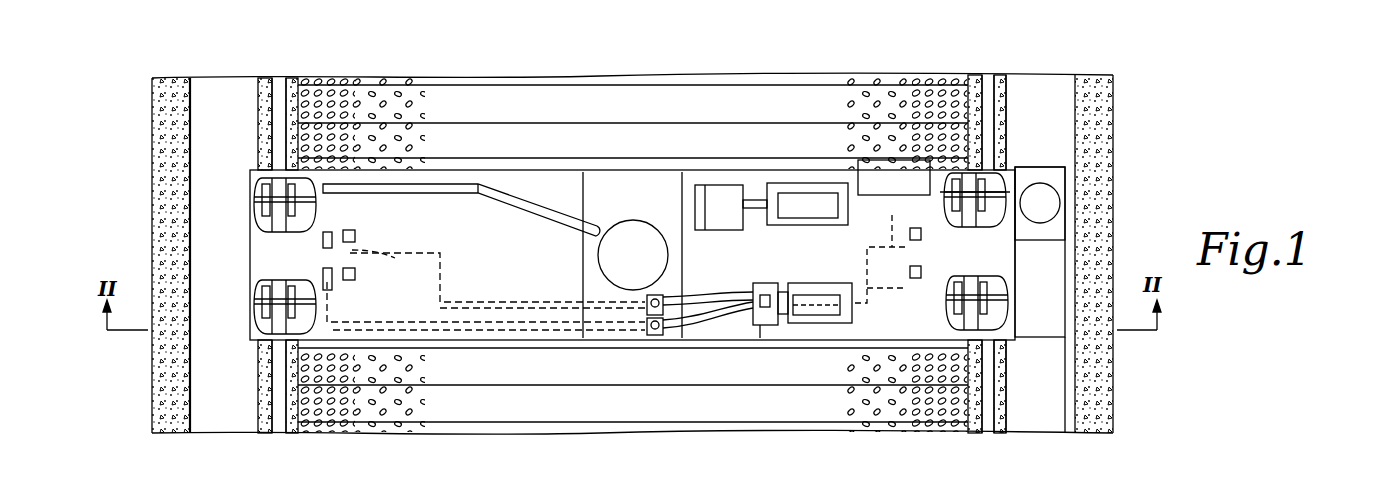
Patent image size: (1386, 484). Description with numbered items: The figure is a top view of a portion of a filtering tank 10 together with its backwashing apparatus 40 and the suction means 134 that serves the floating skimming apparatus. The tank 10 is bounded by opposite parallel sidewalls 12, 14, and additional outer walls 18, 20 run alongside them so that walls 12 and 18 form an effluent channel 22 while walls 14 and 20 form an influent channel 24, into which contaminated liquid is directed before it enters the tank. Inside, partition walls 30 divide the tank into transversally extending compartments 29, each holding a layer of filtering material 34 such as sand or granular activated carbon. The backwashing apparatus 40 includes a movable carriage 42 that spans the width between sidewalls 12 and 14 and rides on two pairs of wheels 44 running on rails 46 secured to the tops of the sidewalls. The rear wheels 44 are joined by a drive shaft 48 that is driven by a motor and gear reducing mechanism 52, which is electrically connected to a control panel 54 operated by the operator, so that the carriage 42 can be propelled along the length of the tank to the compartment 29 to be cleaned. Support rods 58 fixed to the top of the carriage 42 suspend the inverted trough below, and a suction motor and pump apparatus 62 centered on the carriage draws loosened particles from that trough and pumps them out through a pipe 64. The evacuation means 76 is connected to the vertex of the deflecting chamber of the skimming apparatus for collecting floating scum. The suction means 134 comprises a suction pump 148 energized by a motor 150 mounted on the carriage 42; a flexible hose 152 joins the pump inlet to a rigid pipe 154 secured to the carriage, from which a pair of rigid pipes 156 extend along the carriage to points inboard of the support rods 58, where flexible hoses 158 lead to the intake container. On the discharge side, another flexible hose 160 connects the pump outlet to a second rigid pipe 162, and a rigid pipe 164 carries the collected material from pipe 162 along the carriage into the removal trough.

The filtering tank 10 is at (150, 92).
The sidewall 12 is at (1000, 108).
The sidewall 14 is at (258, 102).
The outer wall 18 is at (1113, 190).
The outer wall 20 is at (152, 176).
The effluent channel 22 is at (1055, 390).
The influent channel 24 is at (200, 250).
The compartment 29 is at (425, 98).
The partition wall 30 is at (637, 122).
The filtering material 34 is at (885, 98).
The backwashing apparatus 40 is at (1070, 258).
The movable carriage 42 is at (253, 180).
The wheels 44 is at (268, 215).
The rails 46 is at (279, 78).
The drive shaft 48 is at (948, 194).
The driving motor and gear reducing mechanism 52 is at (800, 220).
The control panel 54 is at (880, 165).
The support rods 58 is at (355, 237).
The suction motor and pump apparatus 62 is at (600, 251).
The pipe 64 is at (455, 193).
The evacuation means 76 is at (797, 280).
The suction means 134 is at (762, 328).
The suction pump 148 is at (760, 286).
The motor 150 is at (840, 316).
The flexible hose 152 is at (685, 300).
The rigid pipe 154 is at (655, 296).
The rigid pipes 156 is at (466, 302).
The flexible hoses 158 is at (410, 268).
The flexible hose 160 is at (690, 314).
The second rigid pipe 162 is at (652, 338).
The rigid pipe 164 is at (323, 277).